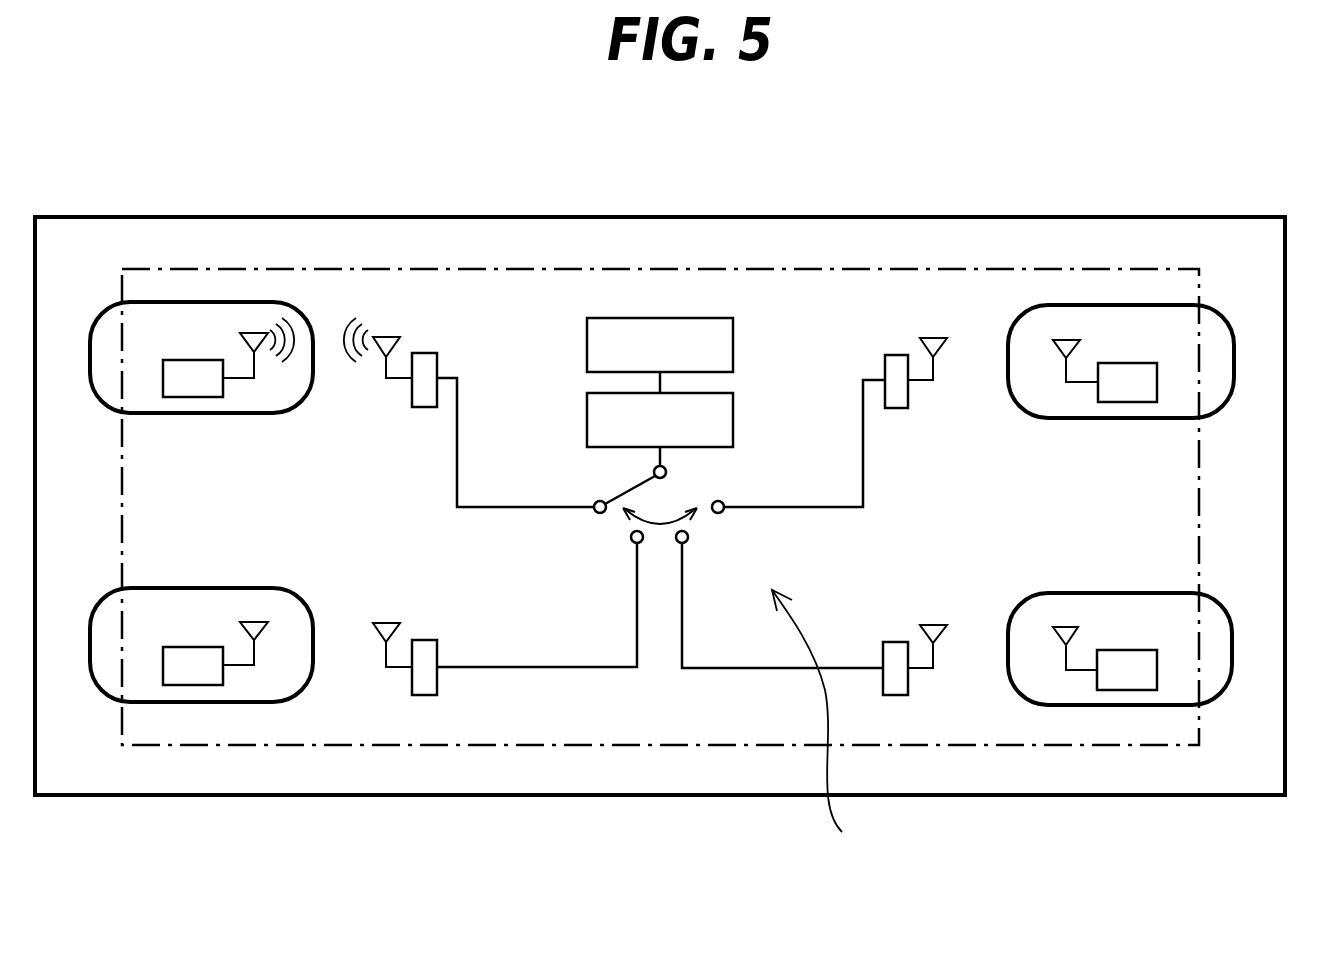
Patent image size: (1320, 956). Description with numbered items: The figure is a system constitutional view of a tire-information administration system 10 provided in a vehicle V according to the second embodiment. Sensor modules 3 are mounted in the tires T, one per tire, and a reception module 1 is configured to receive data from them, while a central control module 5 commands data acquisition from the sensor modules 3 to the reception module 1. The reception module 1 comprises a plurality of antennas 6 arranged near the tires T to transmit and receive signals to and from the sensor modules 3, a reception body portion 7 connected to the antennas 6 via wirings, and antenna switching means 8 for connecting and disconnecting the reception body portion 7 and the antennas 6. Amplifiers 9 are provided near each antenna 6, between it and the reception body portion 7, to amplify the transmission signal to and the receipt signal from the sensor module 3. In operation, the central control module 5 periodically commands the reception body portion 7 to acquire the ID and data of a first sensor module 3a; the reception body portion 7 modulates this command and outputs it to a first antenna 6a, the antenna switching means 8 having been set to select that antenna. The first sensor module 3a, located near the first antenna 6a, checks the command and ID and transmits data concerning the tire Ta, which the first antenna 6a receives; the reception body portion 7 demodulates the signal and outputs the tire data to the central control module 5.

The reception module 1 is at (816, 730).
The sensor module 3 is at (653, 504).
The first sensor module 3a is at (195, 397).
The central control module 5 is at (733, 343).
The antenna 6 is at (645, 400).
The first antenna 6a is at (392, 335).
The reception body portion 7 is at (733, 418).
The antenna switching means 8 is at (705, 528).
The amplifier 9 is at (420, 407).
The tire-information administration system 10 is at (659, 268).
The tire T is at (647, 502).
The tire Ta is at (160, 300).
The vehicle V is at (1160, 217).